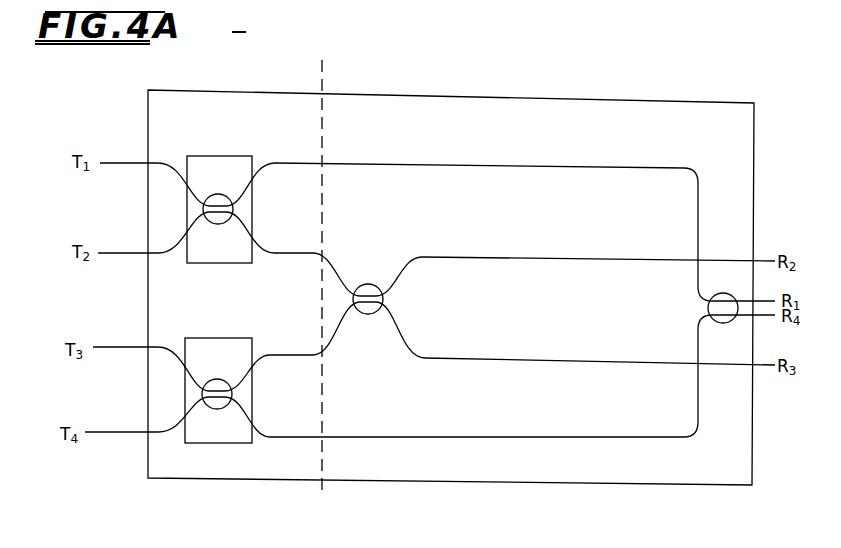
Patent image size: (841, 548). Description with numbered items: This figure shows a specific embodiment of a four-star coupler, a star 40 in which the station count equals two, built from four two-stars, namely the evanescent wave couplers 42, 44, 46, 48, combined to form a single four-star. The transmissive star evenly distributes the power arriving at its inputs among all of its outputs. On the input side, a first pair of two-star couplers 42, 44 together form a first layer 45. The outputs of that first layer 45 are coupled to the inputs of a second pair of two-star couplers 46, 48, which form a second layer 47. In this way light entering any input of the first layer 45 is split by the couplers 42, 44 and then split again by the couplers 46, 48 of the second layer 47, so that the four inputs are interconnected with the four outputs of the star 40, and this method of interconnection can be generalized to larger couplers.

The 2N-star 40 is at (461, 474).
The 2-star coupler 42 is at (252, 212).
The 2-star coupler 44 is at (252, 353).
The first layer 45 is at (247, 66).
The 2-star coupler 46 is at (370, 284).
The second layer 47 is at (442, 81).
The 2-star coupler 48 is at (716, 323).